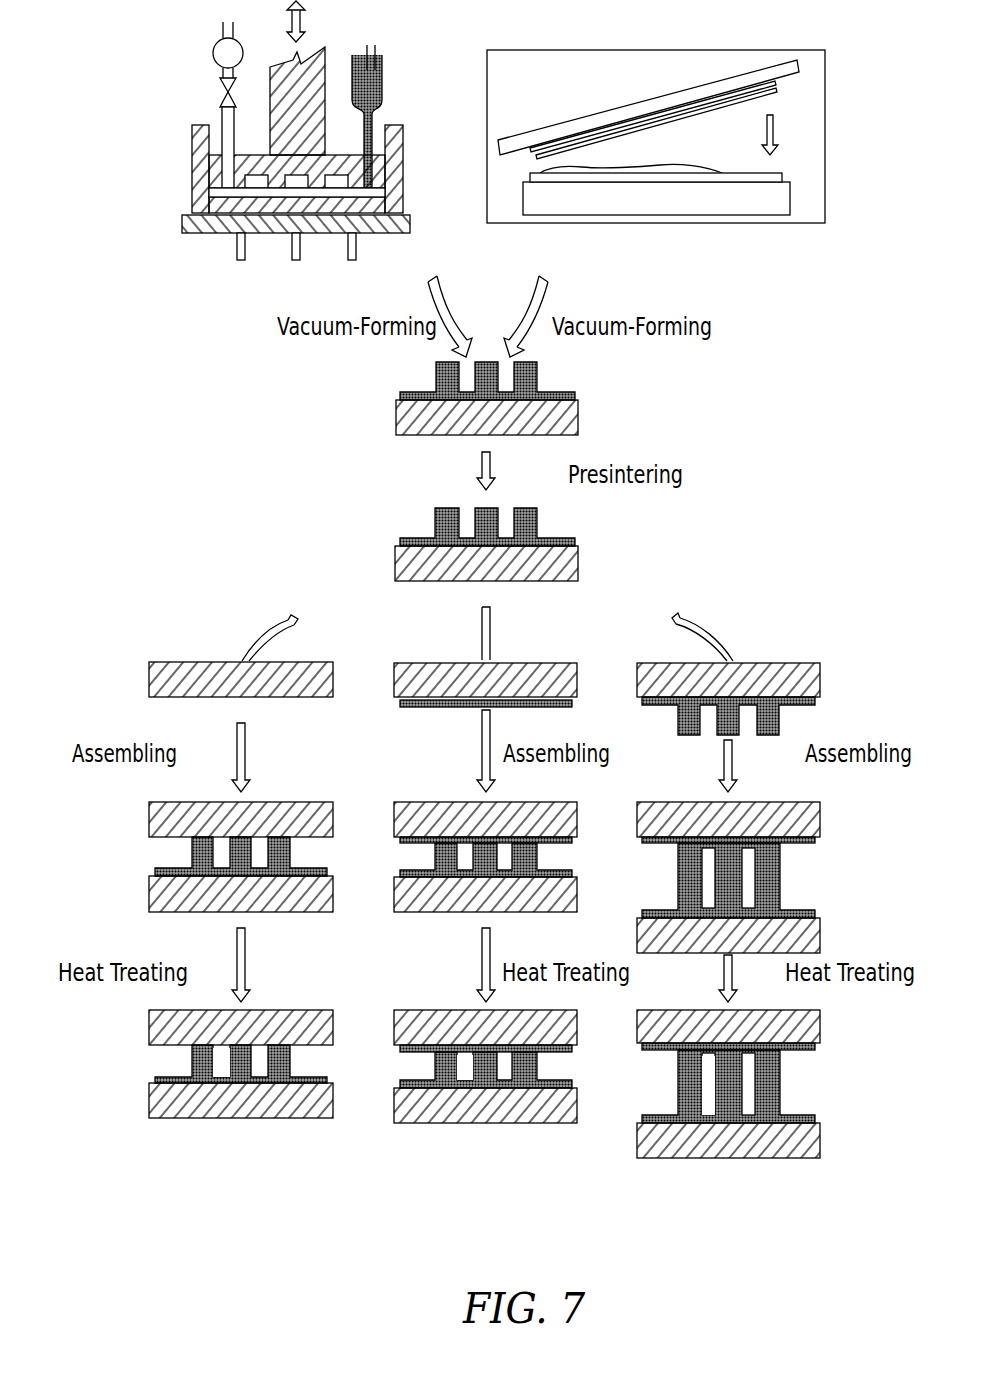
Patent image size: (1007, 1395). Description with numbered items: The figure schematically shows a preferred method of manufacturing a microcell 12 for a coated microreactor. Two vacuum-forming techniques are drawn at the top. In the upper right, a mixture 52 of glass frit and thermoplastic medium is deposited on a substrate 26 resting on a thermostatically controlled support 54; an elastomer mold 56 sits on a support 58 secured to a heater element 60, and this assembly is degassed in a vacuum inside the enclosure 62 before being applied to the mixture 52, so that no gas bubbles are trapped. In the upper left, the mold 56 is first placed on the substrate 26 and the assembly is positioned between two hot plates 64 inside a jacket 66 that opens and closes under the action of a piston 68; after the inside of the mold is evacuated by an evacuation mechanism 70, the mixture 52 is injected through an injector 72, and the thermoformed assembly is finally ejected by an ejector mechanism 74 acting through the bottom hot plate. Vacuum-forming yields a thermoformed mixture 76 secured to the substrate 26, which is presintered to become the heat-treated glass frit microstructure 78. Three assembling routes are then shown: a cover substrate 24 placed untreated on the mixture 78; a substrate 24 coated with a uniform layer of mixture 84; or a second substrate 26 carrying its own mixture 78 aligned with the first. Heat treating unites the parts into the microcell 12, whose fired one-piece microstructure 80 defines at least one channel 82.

The microcell 12 is at (184, 1160).
The substrate 24 is at (205, 662).
The substrate 26 is at (226, 233).
The mixture 52 is at (258, 178).
The thermostatically controlled support 54 is at (775, 200).
The mold made of elastomer 56 is at (300, 172).
The support 58 is at (775, 83).
The heater element 60 is at (588, 123).
The enclosure 62 is at (553, 50).
The hot plates 64 is at (185, 229).
The jacket 66 is at (190, 135).
The piston 68 is at (305, 65).
The evacuation mechanism 70 is at (213, 53).
The injector 72 is at (383, 85).
The ejector mechanism 74 is at (292, 250).
The mixture 76 is at (530, 373).
The presintered mixture 78 is at (530, 518).
The fired one-piece microstructure 80 is at (195, 1063).
The channel 82 is at (258, 1065).
The mixture 84 is at (447, 707).